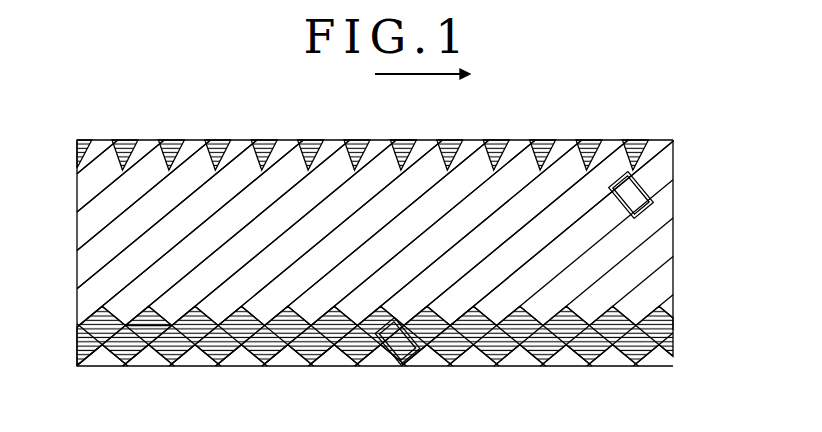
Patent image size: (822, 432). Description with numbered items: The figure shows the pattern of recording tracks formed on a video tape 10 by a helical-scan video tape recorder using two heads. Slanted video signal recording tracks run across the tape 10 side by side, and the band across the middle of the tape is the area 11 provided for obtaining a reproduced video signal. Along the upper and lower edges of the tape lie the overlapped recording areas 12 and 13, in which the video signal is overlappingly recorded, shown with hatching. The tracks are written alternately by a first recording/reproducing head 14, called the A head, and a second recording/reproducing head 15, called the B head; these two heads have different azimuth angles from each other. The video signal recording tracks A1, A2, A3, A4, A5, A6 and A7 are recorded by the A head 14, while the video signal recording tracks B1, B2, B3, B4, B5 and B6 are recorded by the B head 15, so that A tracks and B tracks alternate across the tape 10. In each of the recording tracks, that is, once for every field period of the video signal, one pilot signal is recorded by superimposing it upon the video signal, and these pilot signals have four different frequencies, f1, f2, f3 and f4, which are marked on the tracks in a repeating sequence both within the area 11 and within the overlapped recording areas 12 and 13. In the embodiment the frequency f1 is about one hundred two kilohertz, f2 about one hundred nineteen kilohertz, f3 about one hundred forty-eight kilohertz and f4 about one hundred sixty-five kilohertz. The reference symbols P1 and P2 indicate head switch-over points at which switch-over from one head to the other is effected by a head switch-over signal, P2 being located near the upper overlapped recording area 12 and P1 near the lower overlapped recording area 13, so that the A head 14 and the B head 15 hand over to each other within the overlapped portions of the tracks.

The video tape 10 is at (660, 223).
The area provided for obtaining a reproduced video signal 11 is at (73, 352).
The overlapped recording area 12 is at (184, 150).
The overlapped recording area 13 is at (144, 358).
The first recording/reproducing head 14 is at (650, 170).
The second recording/reproducing head 15 is at (410, 366).
The video signal recording track A1 is at (661, 158).
The video signal recording track A2 is at (569, 158).
The video signal recording track A3 is at (475, 158).
The video signal recording track A4 is at (384, 158).
The video signal recording track A5 is at (291, 158).
The video signal recording track A6 is at (200, 158).
The video signal recording track A7 is at (112, 157).
The video signal recording track B1 is at (615, 158).
The video signal recording track B2 is at (522, 158).
The video signal recording track B3 is at (430, 158).
The video signal recording track B4 is at (337, 158).
The video signal recording track B5 is at (245, 158).
The video signal recording track B6 is at (152, 158).
The pilot signal frequency f1 is at (417, 277).
The pilot signal frequency f2 is at (371, 277).
The pilot signal frequency f3 is at (371, 277).
The pilot signal frequency f4 is at (325, 277).
The head switch-over point P1 is at (210, 312).
The head switch-over point P2 is at (398, 160).